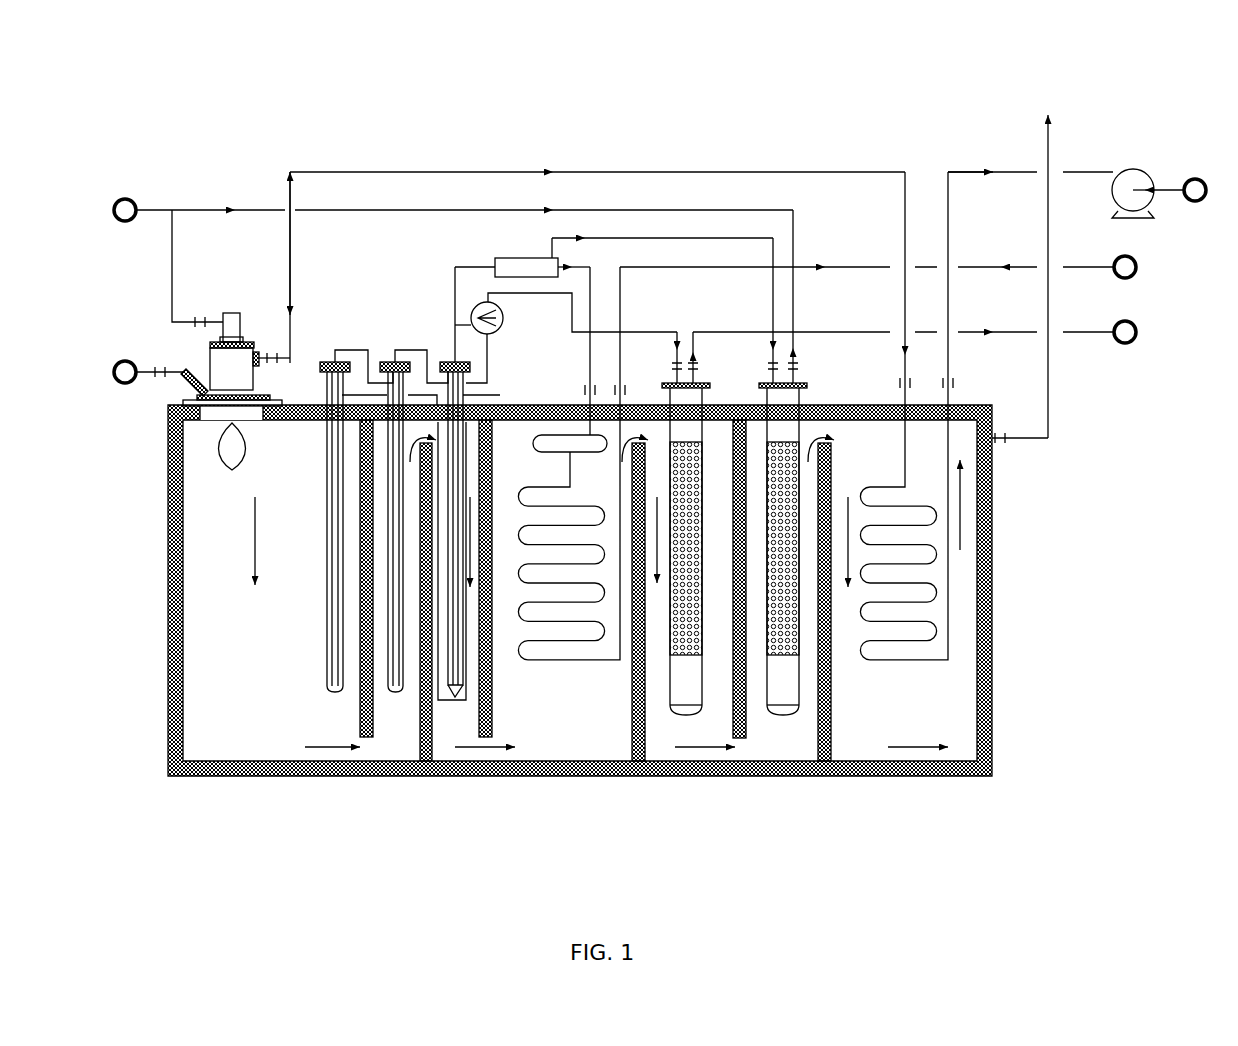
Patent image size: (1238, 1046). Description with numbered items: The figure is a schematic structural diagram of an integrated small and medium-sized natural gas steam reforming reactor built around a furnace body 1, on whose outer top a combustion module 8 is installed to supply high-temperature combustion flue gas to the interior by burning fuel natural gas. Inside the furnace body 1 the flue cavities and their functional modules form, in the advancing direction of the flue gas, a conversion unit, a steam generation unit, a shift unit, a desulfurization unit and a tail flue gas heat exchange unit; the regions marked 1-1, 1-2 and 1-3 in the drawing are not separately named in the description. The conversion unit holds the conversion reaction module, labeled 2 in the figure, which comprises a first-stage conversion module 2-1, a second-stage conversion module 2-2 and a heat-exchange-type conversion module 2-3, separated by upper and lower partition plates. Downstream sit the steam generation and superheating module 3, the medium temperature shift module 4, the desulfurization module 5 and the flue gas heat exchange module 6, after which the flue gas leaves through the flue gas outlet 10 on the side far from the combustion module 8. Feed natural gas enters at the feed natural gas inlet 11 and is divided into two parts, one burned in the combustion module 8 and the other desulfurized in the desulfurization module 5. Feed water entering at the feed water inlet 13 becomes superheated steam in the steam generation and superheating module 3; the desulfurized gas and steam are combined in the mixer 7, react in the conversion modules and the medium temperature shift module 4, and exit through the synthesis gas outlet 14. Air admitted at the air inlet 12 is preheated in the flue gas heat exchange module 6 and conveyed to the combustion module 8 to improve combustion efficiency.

The furnace body 1 is at (182, 582).
The first chamber (combustion chamber) 1-1 is at (242, 708).
The second chamber 1-2 is at (400, 738).
The third chamber 1-3 is at (447, 740).
The electrode assembly 2 is at (347, 548).
The first-stage conversion module 2-1 is at (327, 665).
The second-stage conversion module 2-2 is at (393, 690).
The heat-exchange-type conversion module 2-3 is at (460, 697).
The steam generation and superheating module 3 is at (590, 660).
The medium temperature shift module 4 is at (677, 713).
The desulfurization module 5 is at (798, 678).
The flue gas heat exchange module 6 is at (940, 663).
The mixer 7 is at (458, 322).
The combustion module 8 is at (210, 363).
The flue gas outlet 10 is at (1045, 104).
The feed natural gas inlet 11 is at (128, 222).
The air inlet 12 is at (1190, 202).
The feed water inlet 13 is at (1120, 280).
The synthesis gas outlet 14 is at (1120, 343).